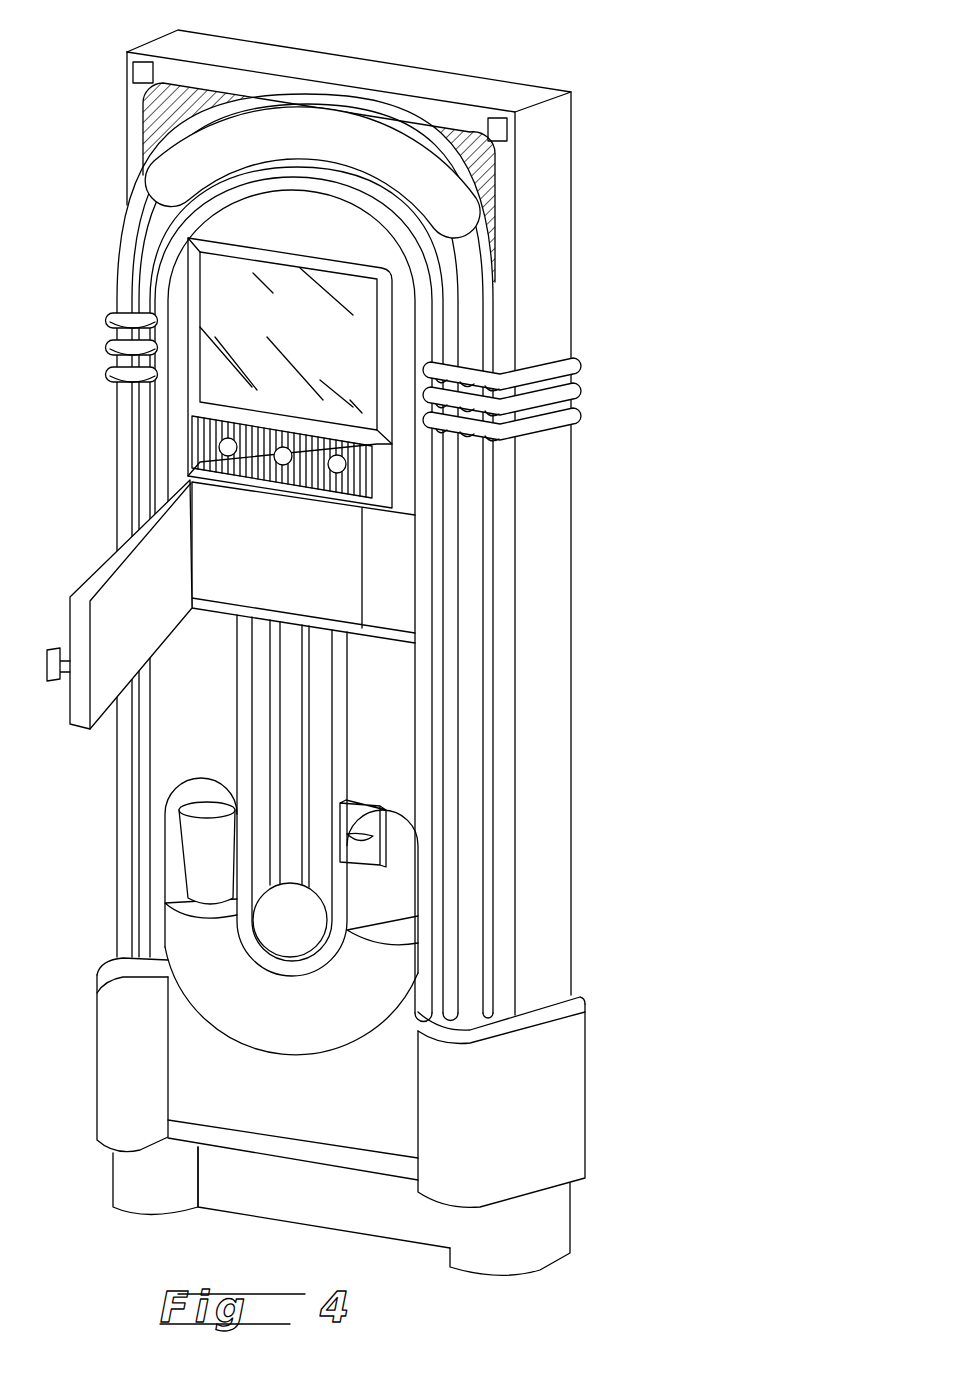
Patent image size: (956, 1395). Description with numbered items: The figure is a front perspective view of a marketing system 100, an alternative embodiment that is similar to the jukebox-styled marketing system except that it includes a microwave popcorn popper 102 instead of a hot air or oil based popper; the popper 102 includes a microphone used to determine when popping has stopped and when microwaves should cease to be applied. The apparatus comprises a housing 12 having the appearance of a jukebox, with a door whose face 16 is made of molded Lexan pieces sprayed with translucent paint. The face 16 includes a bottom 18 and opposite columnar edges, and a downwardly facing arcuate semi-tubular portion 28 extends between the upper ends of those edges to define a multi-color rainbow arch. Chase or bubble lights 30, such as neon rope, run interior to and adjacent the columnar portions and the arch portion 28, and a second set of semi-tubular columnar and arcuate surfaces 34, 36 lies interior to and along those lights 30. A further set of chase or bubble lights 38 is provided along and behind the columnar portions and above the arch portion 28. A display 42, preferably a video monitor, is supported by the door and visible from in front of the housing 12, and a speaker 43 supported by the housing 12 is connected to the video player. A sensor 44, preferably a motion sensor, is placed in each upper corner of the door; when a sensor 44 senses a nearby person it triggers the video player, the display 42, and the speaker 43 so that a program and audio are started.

The marketing system 100 is at (359, 642).
The housing 12 is at (113, 470).
The face 16 is at (370, 1097).
The bottom 18 is at (290, 1228).
The downwardly facing arcuate semi-tubular molded or glass portion 28 is at (122, 238).
The chase lights or bubble lights 30 is at (452, 915).
The semi-tubular columnar and arcuate surface 34 is at (440, 336).
The semi-tubular columnar and arcuate surface 36 is at (440, 727).
The chase lights or bubble lights 38 is at (320, 106).
The display 42 is at (276, 302).
The speaker 43 is at (290, 930).
The sensor 44 is at (133, 70).
The microwave popcorn popper 102 is at (240, 565).